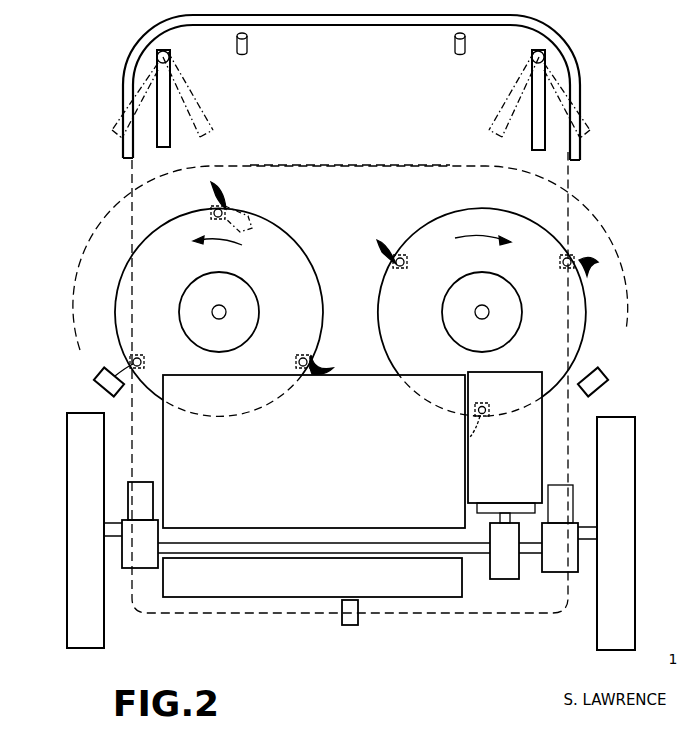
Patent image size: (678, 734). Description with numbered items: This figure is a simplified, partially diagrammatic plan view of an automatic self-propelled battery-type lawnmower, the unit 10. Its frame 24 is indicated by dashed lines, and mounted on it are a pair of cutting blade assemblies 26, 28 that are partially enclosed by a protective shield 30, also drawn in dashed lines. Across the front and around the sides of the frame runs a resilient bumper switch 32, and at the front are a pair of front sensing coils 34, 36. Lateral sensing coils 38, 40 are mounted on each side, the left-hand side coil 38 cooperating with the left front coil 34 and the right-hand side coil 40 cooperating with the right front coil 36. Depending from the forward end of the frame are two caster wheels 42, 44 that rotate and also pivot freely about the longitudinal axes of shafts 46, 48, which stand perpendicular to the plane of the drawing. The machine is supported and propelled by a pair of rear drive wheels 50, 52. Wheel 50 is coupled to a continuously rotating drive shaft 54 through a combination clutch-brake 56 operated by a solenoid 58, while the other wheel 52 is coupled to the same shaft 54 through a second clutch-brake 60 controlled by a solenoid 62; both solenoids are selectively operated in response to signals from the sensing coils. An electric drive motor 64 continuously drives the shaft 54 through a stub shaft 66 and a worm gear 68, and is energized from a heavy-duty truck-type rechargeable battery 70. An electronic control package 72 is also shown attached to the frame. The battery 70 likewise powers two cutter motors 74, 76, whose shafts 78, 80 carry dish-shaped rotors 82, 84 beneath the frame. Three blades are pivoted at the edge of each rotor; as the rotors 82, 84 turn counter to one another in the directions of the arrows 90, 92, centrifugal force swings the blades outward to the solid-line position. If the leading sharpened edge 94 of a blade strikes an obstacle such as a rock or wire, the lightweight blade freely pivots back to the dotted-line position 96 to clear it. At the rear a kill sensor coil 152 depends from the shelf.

The unit 10 is at (120, 65).
The frame 24 is at (120, 184).
The cutting blade assembly 26 is at (290, 236).
The cutting blade assembly 28 is at (426, 220).
The protective shield 30 is at (378, 163).
The resilient bumper switch 32 is at (170, 30).
The front sensing coil 34 is at (247, 47).
The front sensing coil 36 is at (455, 45).
The lateral sensing coil 38 is at (96, 386).
The lateral sensing coil 40 is at (600, 390).
The caster wheel 42 is at (167, 138).
The caster wheel 44 is at (535, 140).
The shaft 46 is at (170, 58).
The shaft 48 is at (531, 57).
The rear drive wheel 50 is at (80, 590).
The rear drive wheel 52 is at (624, 504).
The drive shaft 54 is at (265, 542).
The combination clutch-brake 56 is at (133, 547).
The solenoid 58 is at (133, 507).
The combination clutch-brake 60 is at (560, 563).
The solenoid 62 is at (560, 492).
The electric drive motor 64 is at (504, 454).
The stub shaft 66 is at (508, 520).
The worm gear 68 is at (510, 570).
The rechargeable battery 70 is at (321, 444).
The electronic control package 72 is at (309, 587).
The cutter motor 74 is at (190, 303).
The cutter motor 76 is at (512, 305).
The shaft 78 is at (212, 313).
The shaft 80 is at (474, 313).
The dish-shaped rotor 82 is at (297, 262).
The dish-shaped rotor 84 is at (392, 298).
The arrow 90 is at (212, 243).
The arrow 92 is at (472, 238).
The leading sharpened edge 94 is at (320, 365).
The dotted line position 96 is at (240, 222).
The kill sensor coil 152 is at (358, 618).